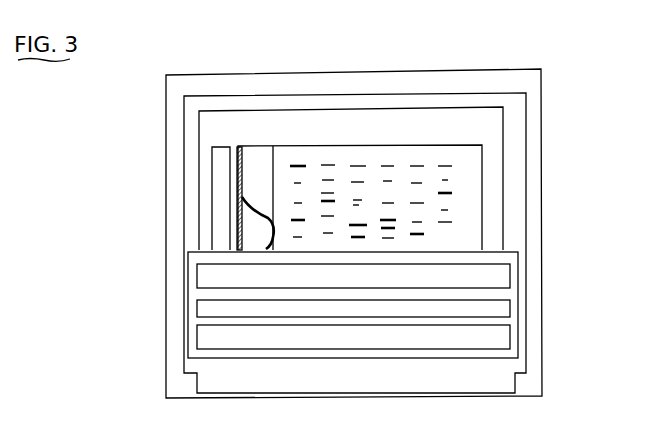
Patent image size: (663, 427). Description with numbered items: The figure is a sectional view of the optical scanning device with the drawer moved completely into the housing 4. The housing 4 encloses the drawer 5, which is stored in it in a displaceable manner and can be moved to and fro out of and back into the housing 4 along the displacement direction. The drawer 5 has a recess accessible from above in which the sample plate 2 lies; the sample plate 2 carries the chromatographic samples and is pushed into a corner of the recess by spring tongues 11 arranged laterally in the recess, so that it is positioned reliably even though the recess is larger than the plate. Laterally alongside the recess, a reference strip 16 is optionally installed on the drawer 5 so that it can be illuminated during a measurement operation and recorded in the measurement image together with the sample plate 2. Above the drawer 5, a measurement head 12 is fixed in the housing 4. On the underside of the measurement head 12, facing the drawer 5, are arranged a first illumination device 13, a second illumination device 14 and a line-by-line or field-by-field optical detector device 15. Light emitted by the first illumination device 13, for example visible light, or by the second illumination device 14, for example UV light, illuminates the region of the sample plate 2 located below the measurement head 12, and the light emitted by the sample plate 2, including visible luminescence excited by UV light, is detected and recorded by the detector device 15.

The sample plate 2 is at (430, 158).
The housing 4 is at (532, 199).
The drawer 5 is at (490, 133).
The spring tongues 11 is at (242, 197).
The measurement head 12 is at (530, 323).
The first illumination device 13 is at (205, 278).
The second illumination device 14 is at (207, 343).
The optical detector device 15 is at (210, 309).
The reference strip 16 is at (220, 197).